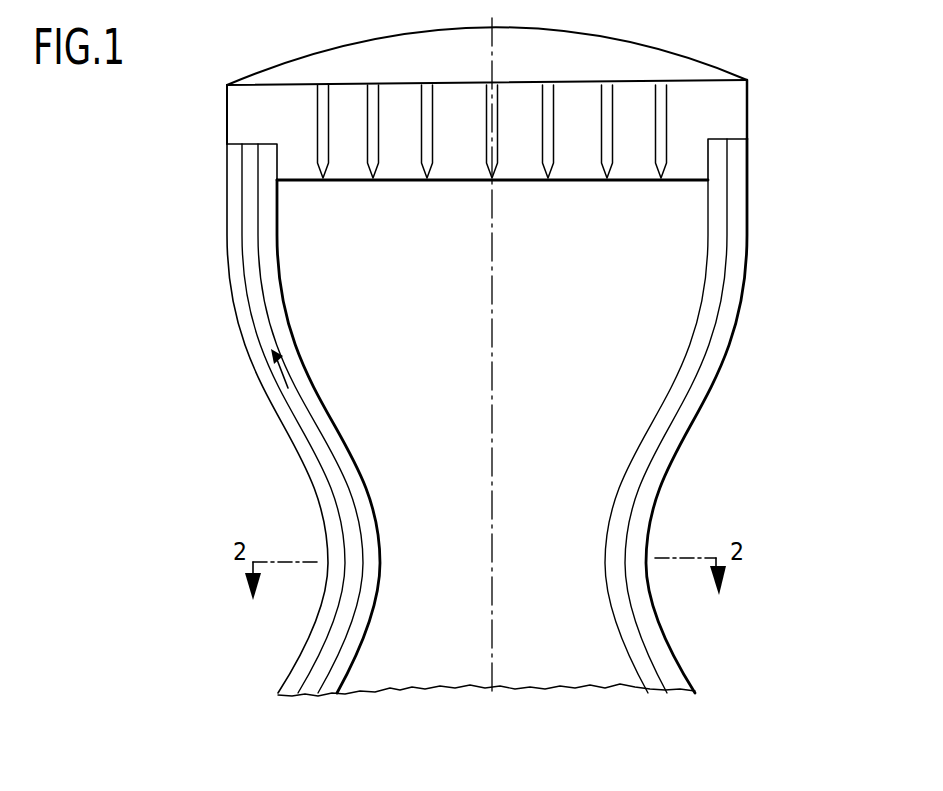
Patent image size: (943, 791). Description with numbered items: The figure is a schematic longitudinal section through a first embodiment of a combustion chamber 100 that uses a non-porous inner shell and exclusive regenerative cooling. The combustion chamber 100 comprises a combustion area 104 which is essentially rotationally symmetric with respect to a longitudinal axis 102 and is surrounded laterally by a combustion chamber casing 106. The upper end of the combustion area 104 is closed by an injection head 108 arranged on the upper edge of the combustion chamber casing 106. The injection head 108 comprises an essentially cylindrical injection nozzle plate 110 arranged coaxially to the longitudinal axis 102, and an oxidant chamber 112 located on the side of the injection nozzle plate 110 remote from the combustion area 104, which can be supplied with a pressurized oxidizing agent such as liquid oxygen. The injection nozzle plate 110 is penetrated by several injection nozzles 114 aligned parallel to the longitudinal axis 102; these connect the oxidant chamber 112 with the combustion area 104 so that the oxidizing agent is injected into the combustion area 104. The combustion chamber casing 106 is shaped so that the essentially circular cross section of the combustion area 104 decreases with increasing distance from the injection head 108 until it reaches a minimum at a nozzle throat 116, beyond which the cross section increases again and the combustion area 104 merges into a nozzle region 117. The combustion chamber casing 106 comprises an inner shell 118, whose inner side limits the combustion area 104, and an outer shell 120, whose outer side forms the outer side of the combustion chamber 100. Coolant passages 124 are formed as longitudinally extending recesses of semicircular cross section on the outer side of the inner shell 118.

The combustion chamber 100 is at (218, 242).
The longitudinal axis 102 is at (493, 500).
The combustion area 104 is at (584, 313).
The combustion chamber casing 106 is at (755, 240).
The injection head 108 is at (714, 62).
The injection nozzle plate 110 is at (728, 118).
The oxidant chamber 112 is at (586, 50).
The injection nozzles 114 is at (373, 100).
The nozzle throat 116 is at (668, 506).
The nozzle region 117 is at (578, 640).
The inner shell 118 is at (288, 338).
The outer shell 120 is at (285, 421).
The coolant passage 124 is at (347, 499).